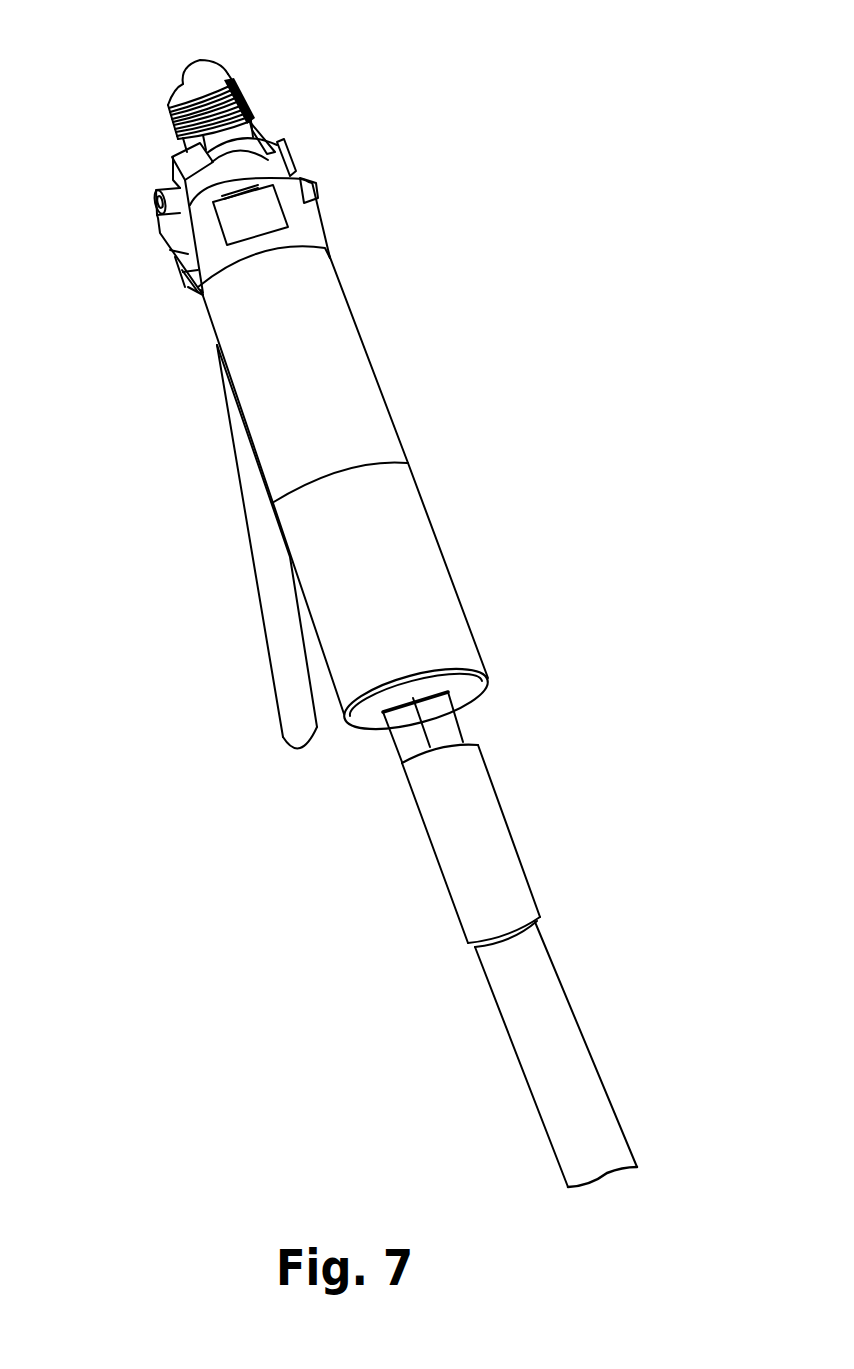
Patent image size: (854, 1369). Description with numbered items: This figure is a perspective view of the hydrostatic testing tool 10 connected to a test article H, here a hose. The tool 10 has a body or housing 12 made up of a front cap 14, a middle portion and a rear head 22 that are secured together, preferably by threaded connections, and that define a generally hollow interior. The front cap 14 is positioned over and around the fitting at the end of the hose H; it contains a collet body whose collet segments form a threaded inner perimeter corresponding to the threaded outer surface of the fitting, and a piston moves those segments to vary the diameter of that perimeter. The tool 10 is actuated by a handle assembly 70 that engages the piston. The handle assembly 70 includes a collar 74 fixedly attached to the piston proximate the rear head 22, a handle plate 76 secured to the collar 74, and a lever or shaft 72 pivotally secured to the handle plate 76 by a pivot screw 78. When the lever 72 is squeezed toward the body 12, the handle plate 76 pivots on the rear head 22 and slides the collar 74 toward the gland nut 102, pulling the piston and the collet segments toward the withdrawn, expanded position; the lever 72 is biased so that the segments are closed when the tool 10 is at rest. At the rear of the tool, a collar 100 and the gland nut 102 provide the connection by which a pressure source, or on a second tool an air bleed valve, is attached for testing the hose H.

The hydrostatic testing tool 10 is at (360, 303).
The body or housing 12 is at (392, 392).
The front cap 14 is at (445, 557).
The rear head 22 is at (186, 282).
The handle assembly 70 is at (150, 235).
The lever or shaft 72 is at (250, 545).
The collar 74 is at (275, 150).
The handle plate 76 is at (297, 164).
The pivot screw 78 is at (158, 194).
The collar 100 is at (236, 80).
The gland nut 102 is at (264, 156).
The test article H is at (566, 993).